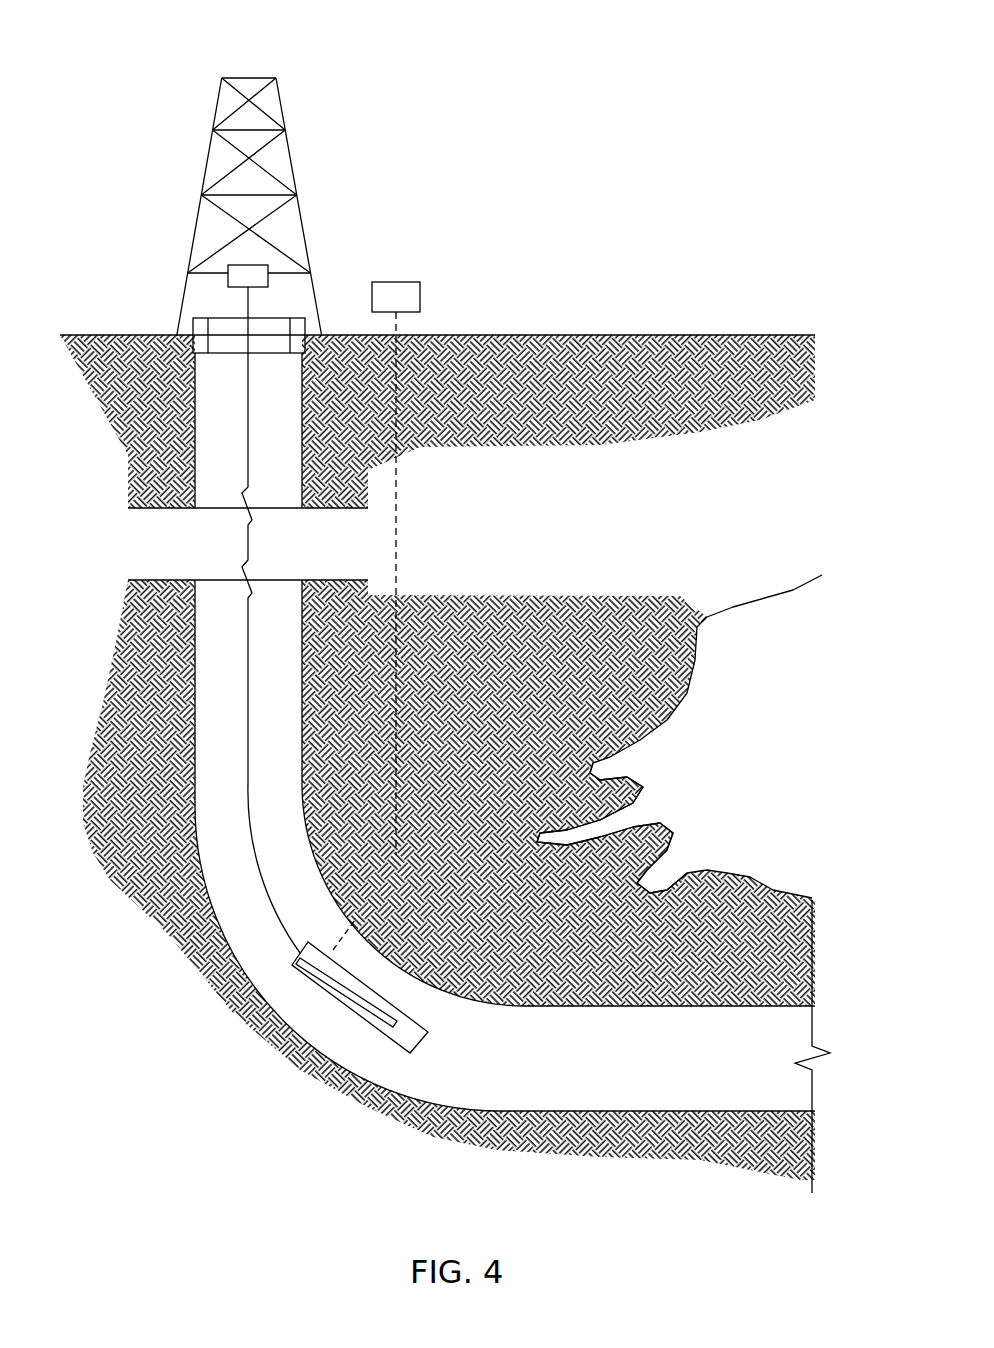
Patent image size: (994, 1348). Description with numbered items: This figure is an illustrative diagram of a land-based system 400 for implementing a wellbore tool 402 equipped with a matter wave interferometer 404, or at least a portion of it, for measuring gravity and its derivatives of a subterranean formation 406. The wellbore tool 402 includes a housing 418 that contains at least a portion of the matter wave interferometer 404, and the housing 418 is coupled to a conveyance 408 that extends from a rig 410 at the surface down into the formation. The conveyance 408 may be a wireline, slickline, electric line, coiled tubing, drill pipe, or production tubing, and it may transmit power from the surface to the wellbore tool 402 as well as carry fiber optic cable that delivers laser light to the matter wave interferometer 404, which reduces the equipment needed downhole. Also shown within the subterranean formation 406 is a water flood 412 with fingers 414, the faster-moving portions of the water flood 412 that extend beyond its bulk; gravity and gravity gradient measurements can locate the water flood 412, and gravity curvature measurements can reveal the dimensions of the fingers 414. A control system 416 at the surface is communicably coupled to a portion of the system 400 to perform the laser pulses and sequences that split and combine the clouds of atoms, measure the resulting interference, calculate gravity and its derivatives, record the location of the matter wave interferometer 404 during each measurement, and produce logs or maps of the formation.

The system 400 is at (119, 47).
The wellbore tool 402 is at (289, 977).
The matter wave interferometer 404 is at (158, 823).
The subterranean formation 406 is at (332, 975).
The conveyance 408 is at (249, 700).
The rig 410 is at (288, 140).
The water flood 412 is at (795, 734).
The fingers 414 is at (590, 768).
The control system 416 is at (420, 292).
The housing 418 is at (372, 1028).